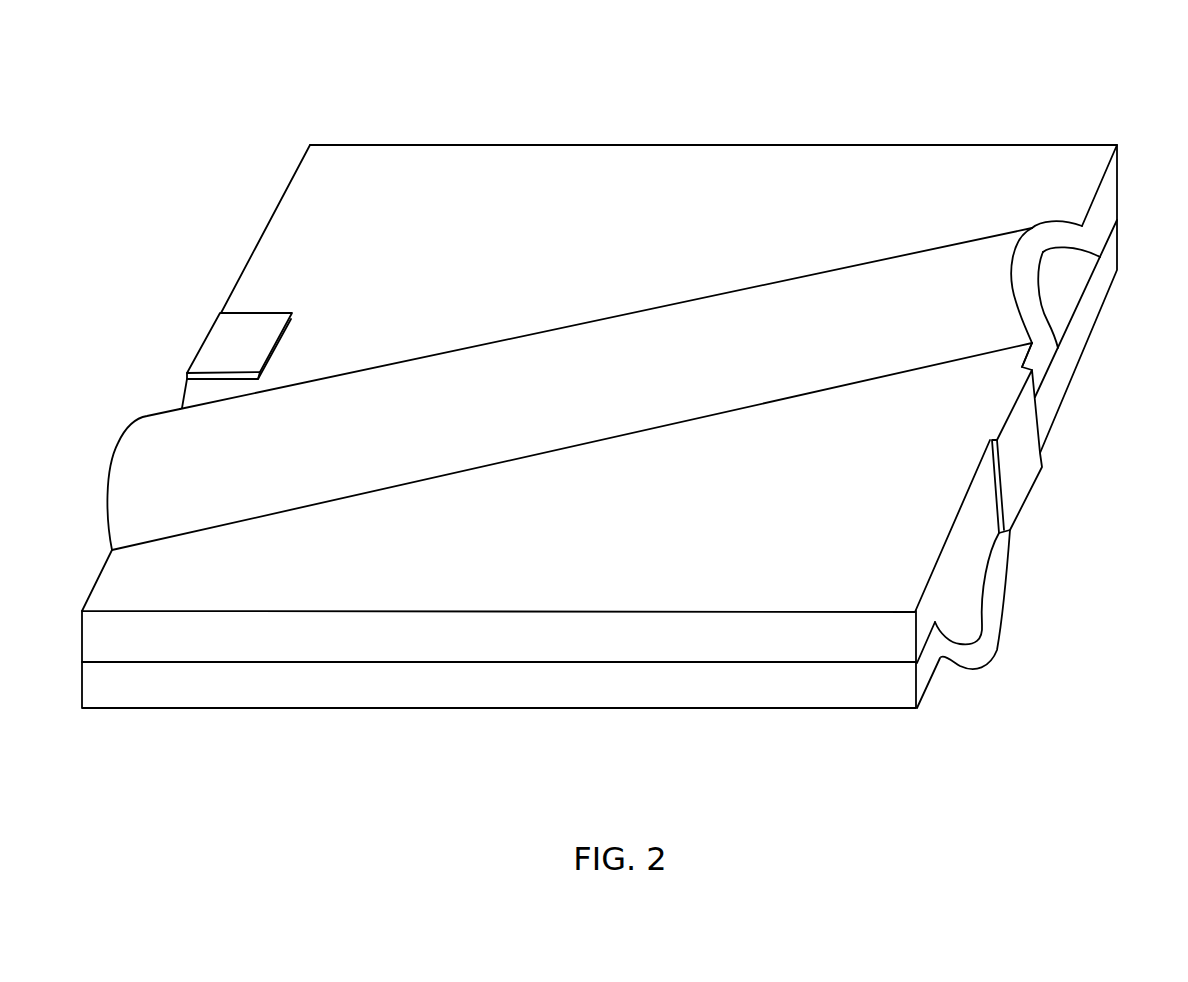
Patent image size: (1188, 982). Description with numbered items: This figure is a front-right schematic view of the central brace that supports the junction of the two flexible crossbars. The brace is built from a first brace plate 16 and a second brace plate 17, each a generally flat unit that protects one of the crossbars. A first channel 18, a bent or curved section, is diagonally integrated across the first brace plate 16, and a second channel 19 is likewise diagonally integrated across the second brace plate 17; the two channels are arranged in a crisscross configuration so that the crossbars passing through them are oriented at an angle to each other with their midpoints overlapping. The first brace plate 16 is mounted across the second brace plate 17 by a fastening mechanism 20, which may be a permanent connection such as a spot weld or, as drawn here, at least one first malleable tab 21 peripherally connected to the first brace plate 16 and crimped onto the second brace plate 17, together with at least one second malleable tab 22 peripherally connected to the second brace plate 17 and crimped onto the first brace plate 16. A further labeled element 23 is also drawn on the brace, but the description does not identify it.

The first brace plate 16 is at (287, 87).
The second brace plate 17 is at (680, 703).
The first channel 18 is at (580, 226).
The second channel 19 is at (970, 587).
The fastening mechanism 20 is at (977, 254).
The first malleable tab 21 is at (189, 288).
The second malleable tab 22 is at (270, 328).
The tab 23 is at (1030, 475).